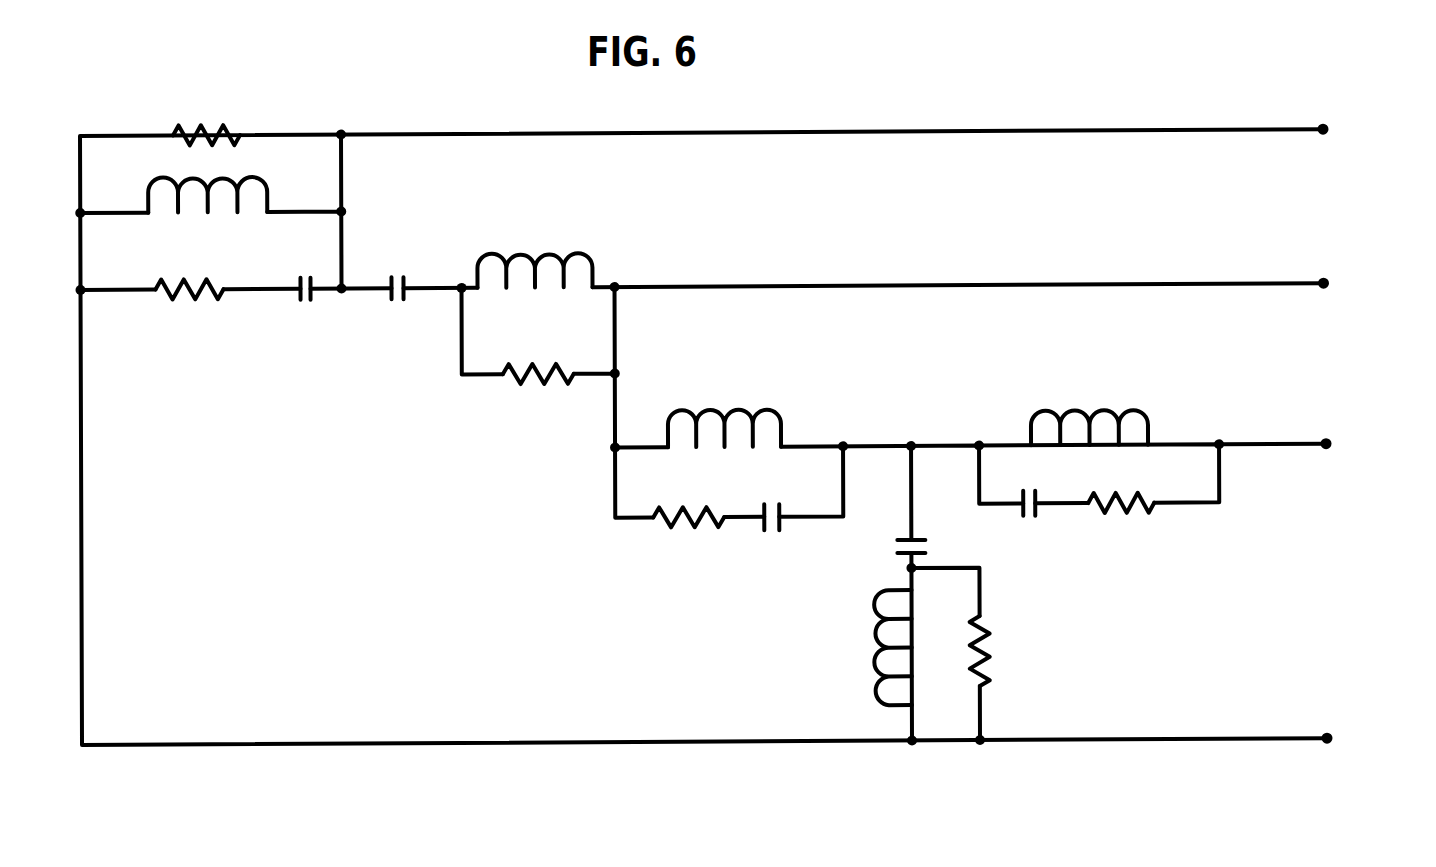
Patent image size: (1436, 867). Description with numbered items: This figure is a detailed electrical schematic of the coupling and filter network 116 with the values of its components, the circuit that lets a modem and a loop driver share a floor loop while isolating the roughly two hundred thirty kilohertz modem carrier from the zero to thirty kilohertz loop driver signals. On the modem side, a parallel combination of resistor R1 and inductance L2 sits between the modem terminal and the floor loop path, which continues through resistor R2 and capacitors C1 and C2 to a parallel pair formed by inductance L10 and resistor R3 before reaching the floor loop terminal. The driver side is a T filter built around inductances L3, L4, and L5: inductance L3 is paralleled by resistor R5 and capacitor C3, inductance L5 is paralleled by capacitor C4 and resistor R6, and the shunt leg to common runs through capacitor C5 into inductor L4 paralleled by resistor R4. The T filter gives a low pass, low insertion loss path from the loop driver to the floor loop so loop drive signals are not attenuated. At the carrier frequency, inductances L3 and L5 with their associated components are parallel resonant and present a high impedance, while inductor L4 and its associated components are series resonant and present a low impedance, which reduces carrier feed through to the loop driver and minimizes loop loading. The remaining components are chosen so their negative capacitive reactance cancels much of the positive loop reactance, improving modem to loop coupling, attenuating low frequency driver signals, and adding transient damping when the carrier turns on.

The coupling and filter network 116 is at (908, 132).
The resistor R1 is at (206, 109).
The inductance L2 is at (207, 198).
The resistor R2 is at (191, 318).
The capacitor C1 is at (308, 318).
The capacitor C2 is at (413, 316).
The inductance L10 is at (531, 273).
The resistor R3 is at (538, 405).
The inductance L3 is at (730, 400).
The resistor R5 is at (688, 546).
The capacitor C3 is at (781, 544).
The capacitor C5 is at (935, 538).
The inductor L4 is at (852, 648).
The resistor R4 is at (1017, 651).
The inductance L5 is at (1089, 394).
The capacitor C4 is at (1029, 531).
The resistor R6 is at (1124, 532).